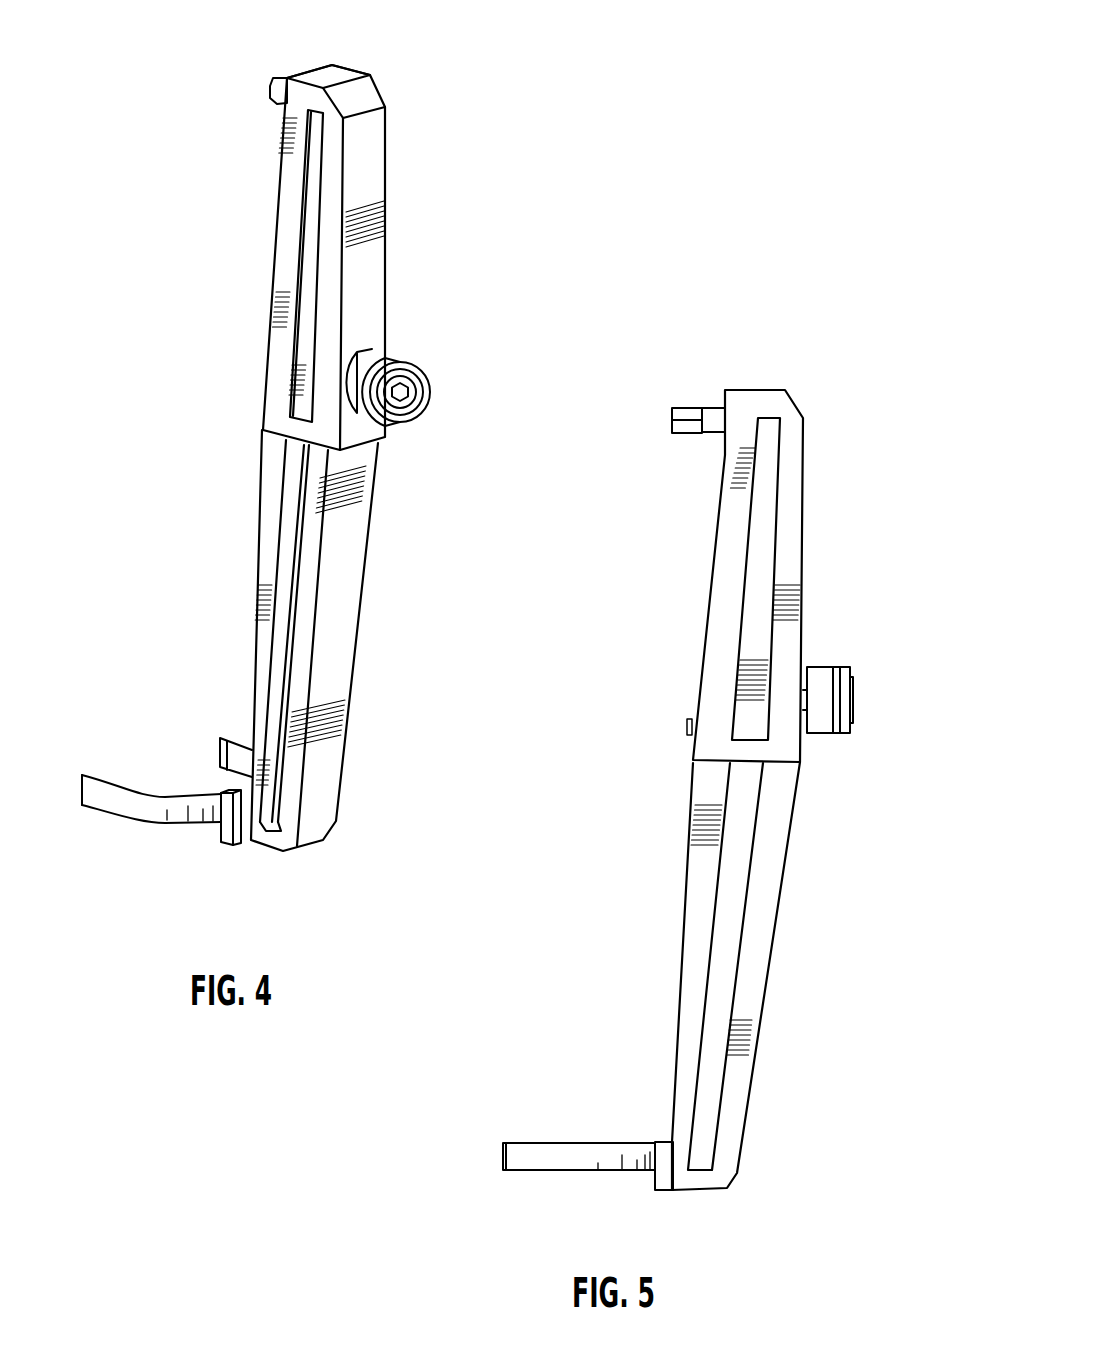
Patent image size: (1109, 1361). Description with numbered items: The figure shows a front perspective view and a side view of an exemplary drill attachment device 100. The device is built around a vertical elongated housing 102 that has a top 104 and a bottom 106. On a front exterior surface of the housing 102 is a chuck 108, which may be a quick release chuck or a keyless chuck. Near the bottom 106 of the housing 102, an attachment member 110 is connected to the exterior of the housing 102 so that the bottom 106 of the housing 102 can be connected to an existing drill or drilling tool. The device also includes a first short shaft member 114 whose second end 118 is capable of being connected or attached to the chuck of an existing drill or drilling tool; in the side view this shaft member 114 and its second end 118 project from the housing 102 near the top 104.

In FIG. 4, the drill attachment device 100 is at (426, 138).
In FIG. 5, the drill attachment device 100 is at (832, 382).
In FIG. 4, the vertical elongated housing 102 is at (348, 595).
In FIG. 5, the vertical elongated housing 102 is at (763, 903).
In FIG. 4, the top 104 is at (333, 75).
In FIG. 5, the top 104 is at (760, 388).
In FIG. 4, the bottom 106 is at (320, 790).
In FIG. 5, the bottom 106 is at (698, 1192).
In FIG. 4, the chuck 108 is at (395, 357).
In FIG. 5, the chuck 108 is at (833, 668).
In FIG. 4, the attachment member 110 is at (140, 812).
In FIG. 5, the attachment member 110 is at (540, 1170).
In FIG. 5, the first short shaft member 114 is at (715, 417).
In FIG. 4, the second end 118 is at (275, 90).
In FIG. 5, the second end 118 is at (678, 428).